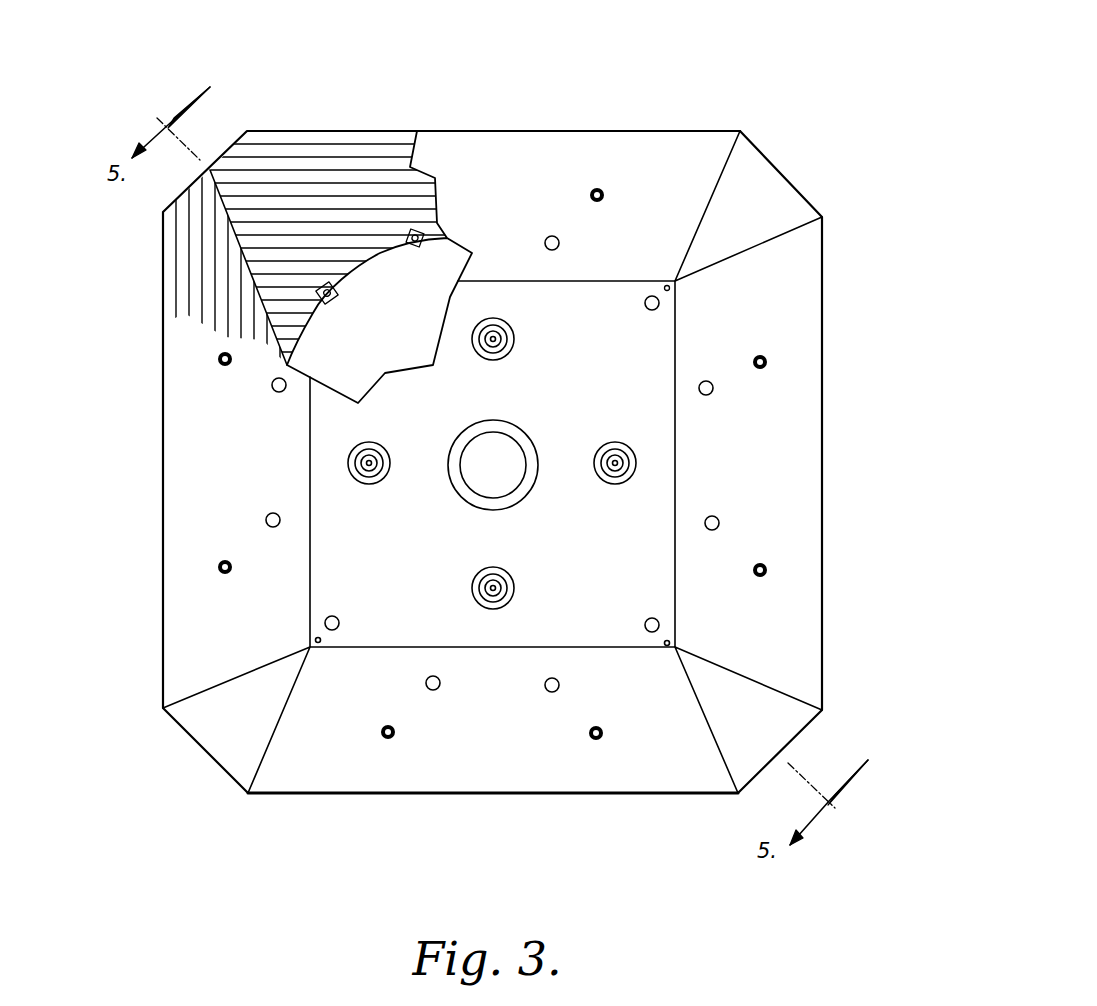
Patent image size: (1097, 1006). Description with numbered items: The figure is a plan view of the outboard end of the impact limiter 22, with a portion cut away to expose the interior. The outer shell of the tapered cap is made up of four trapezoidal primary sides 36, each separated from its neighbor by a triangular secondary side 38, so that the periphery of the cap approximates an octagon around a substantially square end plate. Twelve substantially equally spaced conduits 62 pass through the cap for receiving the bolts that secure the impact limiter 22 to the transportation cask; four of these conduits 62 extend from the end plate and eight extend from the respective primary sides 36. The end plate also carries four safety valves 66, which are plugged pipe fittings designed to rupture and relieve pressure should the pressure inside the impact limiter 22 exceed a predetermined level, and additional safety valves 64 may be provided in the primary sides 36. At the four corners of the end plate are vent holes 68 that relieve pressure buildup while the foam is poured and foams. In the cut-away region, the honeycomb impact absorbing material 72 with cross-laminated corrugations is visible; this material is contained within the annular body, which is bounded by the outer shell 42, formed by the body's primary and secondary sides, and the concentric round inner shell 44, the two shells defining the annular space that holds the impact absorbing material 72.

The impact limiter 22 is at (757, 100).
The primary side 36 is at (472, 746).
The secondary side 38 is at (783, 172).
The outer shell 42 is at (583, 132).
The inner shell 44 is at (363, 277).
The conduit 62 is at (553, 236).
The safety valve 64 is at (596, 190).
The safety valve 66 is at (513, 340).
The vent hole 68 is at (668, 288).
The impact absorbing material 72 is at (318, 160).